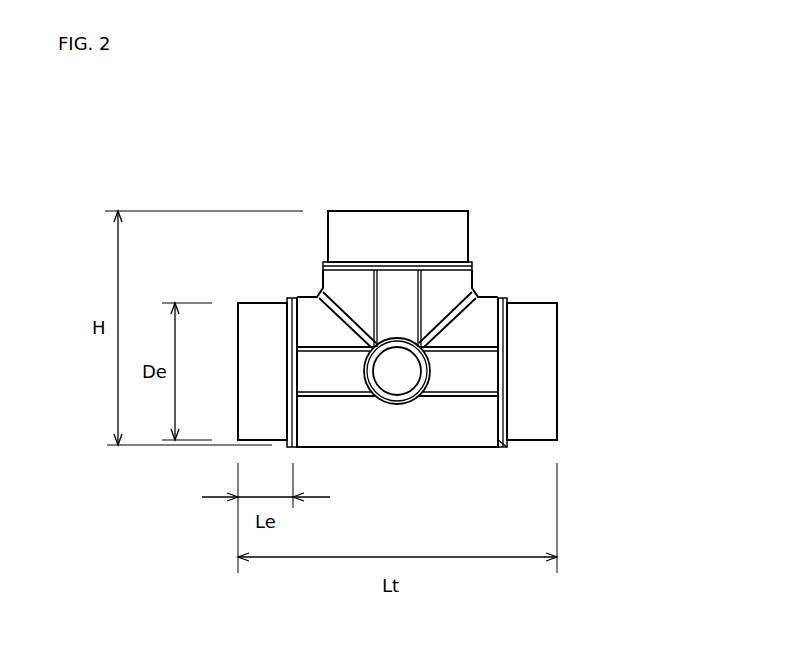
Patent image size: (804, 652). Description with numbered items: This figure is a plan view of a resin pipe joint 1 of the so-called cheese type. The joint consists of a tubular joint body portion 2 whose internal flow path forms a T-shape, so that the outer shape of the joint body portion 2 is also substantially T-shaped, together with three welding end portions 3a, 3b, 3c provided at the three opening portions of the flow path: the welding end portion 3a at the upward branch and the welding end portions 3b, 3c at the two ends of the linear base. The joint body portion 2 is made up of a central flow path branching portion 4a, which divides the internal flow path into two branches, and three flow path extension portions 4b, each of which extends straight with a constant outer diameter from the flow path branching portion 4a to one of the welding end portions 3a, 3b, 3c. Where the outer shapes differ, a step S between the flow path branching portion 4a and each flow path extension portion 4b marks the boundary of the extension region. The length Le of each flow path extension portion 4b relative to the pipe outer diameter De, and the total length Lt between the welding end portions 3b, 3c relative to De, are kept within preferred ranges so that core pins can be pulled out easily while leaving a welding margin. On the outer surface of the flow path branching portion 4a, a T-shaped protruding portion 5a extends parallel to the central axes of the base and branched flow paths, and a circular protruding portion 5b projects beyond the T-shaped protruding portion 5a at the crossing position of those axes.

The resin pipe joint 1 is at (577, 126).
The joint body portion 2 is at (415, 313).
The welding end portion 3a is at (352, 210).
The welding end portion 3b is at (557, 440).
The welding end portion 3c is at (237, 308).
The flow path branching portion 4a is at (487, 303).
The flow path extension portion 4b is at (493, 233).
The T-shaped protruding portion 5a is at (310, 370).
The circular protruding portion 5b is at (403, 376).
The step S is at (505, 447).